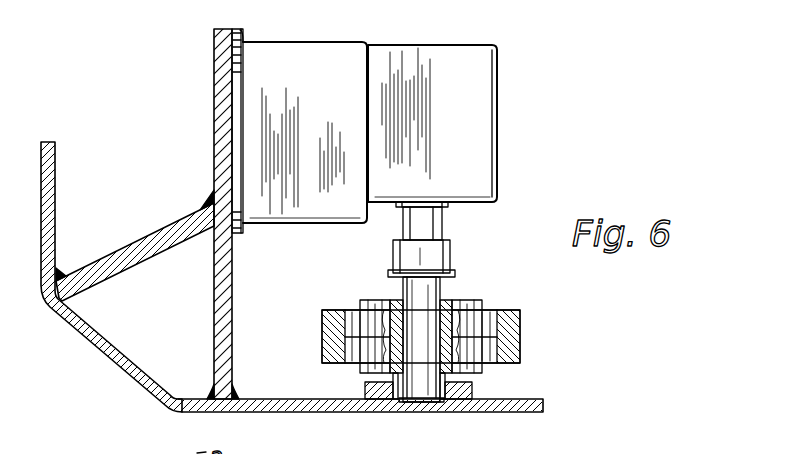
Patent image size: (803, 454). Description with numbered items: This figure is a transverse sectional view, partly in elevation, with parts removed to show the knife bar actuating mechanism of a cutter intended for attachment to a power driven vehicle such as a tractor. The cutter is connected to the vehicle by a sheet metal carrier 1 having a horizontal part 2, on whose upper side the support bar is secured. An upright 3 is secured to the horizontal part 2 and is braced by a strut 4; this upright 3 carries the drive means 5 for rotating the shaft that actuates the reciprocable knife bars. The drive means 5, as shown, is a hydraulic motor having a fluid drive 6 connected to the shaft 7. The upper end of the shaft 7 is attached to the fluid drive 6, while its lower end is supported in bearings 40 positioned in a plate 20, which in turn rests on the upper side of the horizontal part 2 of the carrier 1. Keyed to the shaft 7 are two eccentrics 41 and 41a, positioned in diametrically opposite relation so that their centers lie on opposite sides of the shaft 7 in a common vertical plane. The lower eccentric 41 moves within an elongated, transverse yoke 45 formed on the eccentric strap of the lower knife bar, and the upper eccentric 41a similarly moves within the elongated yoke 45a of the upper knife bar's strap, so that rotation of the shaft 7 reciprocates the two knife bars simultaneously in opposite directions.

The sheet metal carrier 1 is at (132, 386).
The horizontal part 2 is at (495, 413).
The upright 3 is at (215, 122).
The strut 4 is at (158, 233).
The drive means 5 is at (322, 86).
The fluid drive 6 is at (461, 115).
The shaft 7 is at (403, 286).
The plate 20 is at (367, 413).
The bearings 40 is at (424, 413).
The eccentric 41 is at (387, 348).
The upper eccentric 41a is at (453, 318).
The yoke 45 is at (521, 350).
The yoke 45a is at (521, 318).